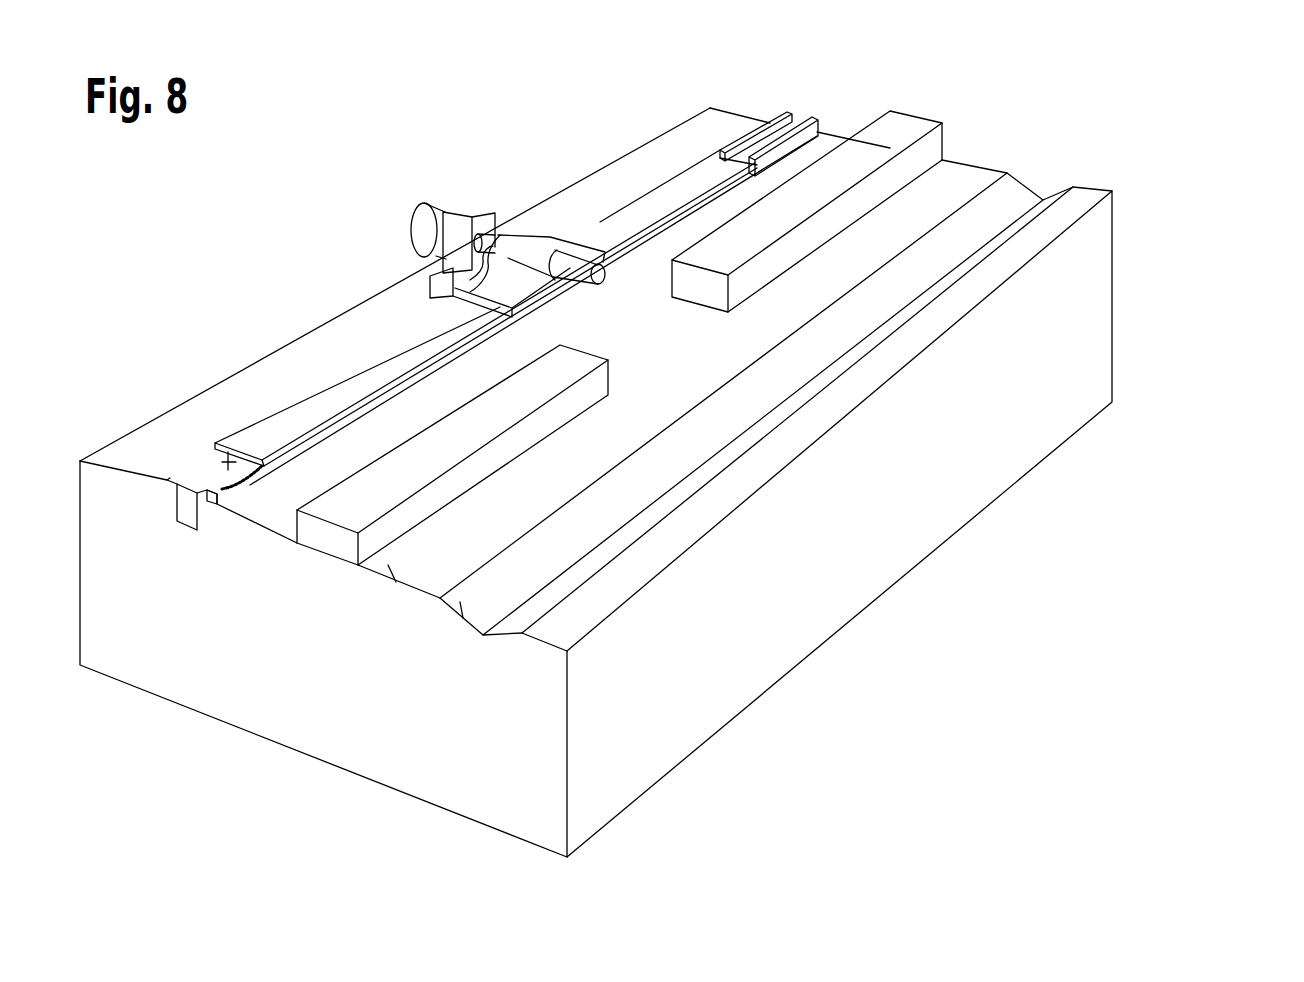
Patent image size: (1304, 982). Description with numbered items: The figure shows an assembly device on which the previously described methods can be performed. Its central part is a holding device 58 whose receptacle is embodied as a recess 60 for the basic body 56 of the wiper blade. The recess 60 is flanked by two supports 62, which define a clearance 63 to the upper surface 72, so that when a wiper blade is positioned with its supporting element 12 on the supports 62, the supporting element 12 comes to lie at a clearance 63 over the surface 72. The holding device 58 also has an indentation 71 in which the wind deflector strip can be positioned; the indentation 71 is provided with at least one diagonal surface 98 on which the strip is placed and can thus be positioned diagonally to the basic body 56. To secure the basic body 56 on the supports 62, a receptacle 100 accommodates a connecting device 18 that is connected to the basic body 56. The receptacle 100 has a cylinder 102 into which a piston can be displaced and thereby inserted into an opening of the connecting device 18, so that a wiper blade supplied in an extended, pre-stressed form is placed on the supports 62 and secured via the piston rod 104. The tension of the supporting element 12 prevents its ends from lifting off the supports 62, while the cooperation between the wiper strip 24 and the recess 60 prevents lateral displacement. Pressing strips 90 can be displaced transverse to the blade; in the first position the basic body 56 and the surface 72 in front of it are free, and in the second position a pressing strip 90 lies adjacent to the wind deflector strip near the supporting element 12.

The supporting element 12 is at (273, 430).
The connecting device 18 is at (540, 245).
The wiper strip 24 is at (210, 460).
The basic body 56 is at (290, 378).
The holding device 58 is at (1182, 176).
The recess 60 is at (187, 501).
The supports 62 is at (170, 478).
The clearance 63 is at (222, 418).
The indentation 71 is at (1040, 180).
The upper surface 72 is at (395, 582).
The pressing strips 90 is at (910, 128).
The diagonal surface 98 is at (462, 618).
The receptacle 100 is at (488, 188).
The cylinder 102 is at (412, 236).
The piston rod 104 is at (488, 237).